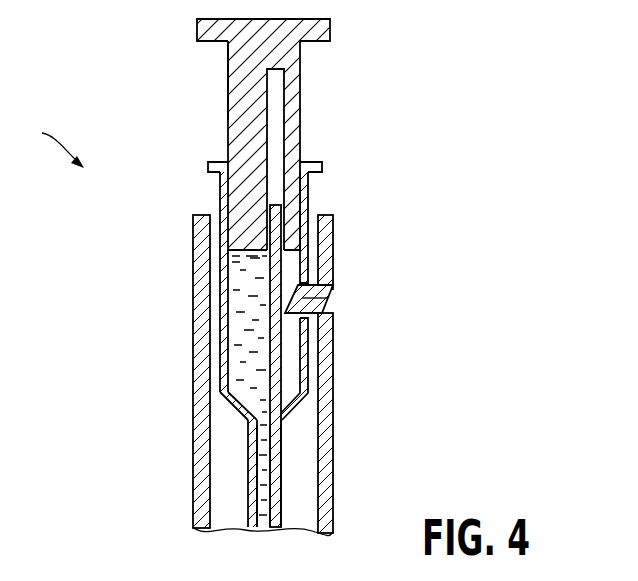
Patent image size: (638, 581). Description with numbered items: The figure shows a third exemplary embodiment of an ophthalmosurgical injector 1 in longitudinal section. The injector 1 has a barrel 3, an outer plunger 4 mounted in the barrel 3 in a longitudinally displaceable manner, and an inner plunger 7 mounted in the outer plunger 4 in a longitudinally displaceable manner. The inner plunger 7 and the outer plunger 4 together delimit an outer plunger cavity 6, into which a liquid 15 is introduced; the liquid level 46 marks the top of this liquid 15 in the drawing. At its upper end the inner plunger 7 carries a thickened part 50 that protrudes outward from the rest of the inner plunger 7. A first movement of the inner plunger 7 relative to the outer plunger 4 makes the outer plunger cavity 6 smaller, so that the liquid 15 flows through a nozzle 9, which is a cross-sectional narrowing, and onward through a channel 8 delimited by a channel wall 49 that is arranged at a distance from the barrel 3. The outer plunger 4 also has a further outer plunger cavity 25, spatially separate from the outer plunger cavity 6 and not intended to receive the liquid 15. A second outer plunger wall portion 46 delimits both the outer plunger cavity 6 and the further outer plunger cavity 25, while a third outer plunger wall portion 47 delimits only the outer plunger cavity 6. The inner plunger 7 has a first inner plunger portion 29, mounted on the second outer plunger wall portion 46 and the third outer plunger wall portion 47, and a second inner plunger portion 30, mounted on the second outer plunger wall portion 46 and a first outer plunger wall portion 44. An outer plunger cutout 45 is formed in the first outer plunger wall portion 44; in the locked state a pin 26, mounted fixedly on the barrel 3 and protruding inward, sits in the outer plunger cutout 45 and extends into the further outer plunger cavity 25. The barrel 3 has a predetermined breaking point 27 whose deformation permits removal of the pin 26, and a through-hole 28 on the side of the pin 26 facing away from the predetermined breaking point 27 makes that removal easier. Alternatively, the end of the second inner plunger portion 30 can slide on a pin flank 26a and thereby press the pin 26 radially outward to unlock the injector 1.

The ophthalmosurgical injector 1 is at (55, 140).
The barrel 3 is at (193, 487).
The outer plunger 4 is at (220, 178).
The outer plunger cavity 6 is at (187, 386).
The inner plunger 7 is at (228, 58).
The channel 8 is at (265, 480).
The nozzle 9 is at (235, 418).
The liquid 15 is at (243, 366).
The further outer plunger cavity 25 is at (283, 363).
The pin 26 is at (330, 302).
The pin flank 26a is at (326, 289).
The predetermined breaking point 27 is at (325, 397).
The through-hole 28 is at (333, 285).
The first inner plunger portion 29 is at (228, 103).
The second inner plunger portion 30 is at (302, 100).
The first outer plunger wall portion 44 is at (308, 192).
The outer plunger cutout 45 is at (310, 325).
The second outer plunger wall portion 46 is at (262, 284).
The third outer plunger wall portion 47 is at (224, 325).
The channel wall 49 is at (283, 447).
The thickened part 50 is at (330, 33).